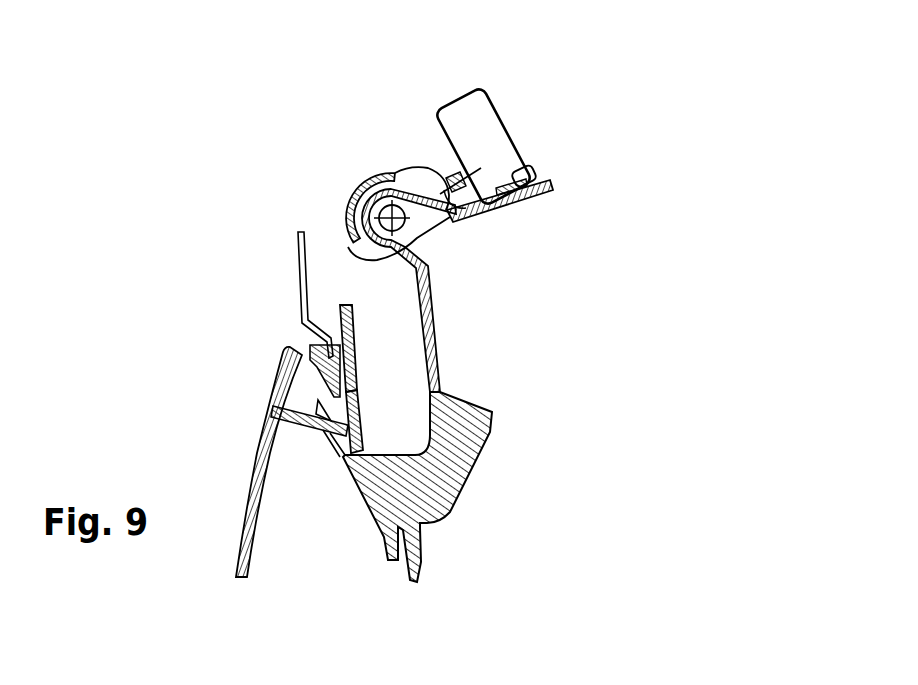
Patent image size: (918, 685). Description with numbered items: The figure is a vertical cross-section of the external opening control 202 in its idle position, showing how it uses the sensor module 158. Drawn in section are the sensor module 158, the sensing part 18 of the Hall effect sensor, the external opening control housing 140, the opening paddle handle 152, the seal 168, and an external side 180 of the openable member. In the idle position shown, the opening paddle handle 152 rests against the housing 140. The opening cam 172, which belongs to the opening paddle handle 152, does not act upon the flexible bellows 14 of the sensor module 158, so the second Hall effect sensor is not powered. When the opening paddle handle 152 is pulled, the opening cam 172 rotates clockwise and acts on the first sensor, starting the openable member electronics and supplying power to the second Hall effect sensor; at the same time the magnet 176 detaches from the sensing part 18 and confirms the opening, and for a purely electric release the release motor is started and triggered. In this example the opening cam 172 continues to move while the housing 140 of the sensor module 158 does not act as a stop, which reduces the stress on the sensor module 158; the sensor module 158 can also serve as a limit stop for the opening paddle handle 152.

The external opening control 202 is at (790, 49).
The sensor module 158 is at (486, 102).
The sensing part 18 is at (536, 170).
The magnet 176 is at (525, 203).
The opening cam 172 is at (402, 170).
The flexible bellows 14 is at (448, 230).
The external side 180 is at (302, 262).
The external opening control housing 140 is at (355, 323).
The opening paddle handle 152 is at (258, 446).
The seal 168 is at (326, 428).